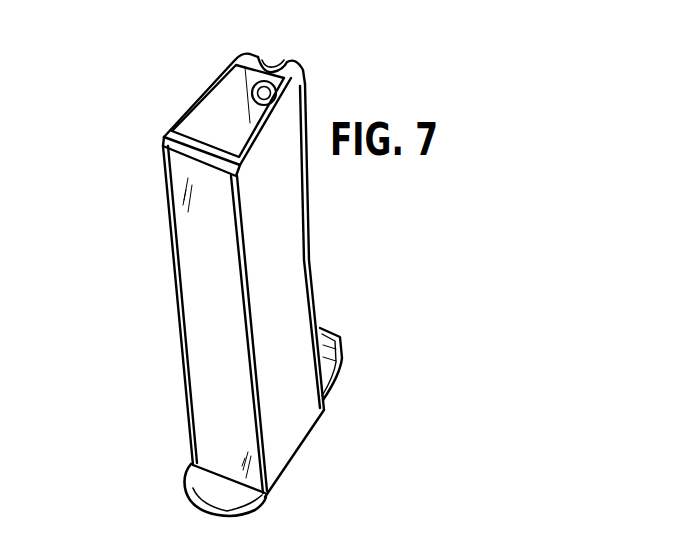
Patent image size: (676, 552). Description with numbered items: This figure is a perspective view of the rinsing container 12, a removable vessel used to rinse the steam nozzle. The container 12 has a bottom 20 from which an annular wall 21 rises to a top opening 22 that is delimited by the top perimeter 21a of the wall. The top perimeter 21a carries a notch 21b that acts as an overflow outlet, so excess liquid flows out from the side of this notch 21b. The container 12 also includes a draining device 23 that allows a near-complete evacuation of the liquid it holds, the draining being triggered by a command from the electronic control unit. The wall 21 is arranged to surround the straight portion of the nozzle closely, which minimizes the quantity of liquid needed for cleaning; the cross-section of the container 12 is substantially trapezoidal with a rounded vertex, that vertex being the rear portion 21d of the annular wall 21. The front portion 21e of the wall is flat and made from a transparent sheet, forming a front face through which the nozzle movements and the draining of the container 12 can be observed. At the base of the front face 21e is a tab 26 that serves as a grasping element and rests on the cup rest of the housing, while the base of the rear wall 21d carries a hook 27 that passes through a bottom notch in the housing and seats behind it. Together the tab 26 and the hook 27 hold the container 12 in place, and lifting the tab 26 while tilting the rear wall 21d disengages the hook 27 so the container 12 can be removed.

The rinsing container 12 is at (134, 113).
The bottom 20 is at (288, 472).
The annular wall 21 is at (297, 395).
The top perimeter 21a is at (212, 73).
The notch 21b is at (273, 62).
The rear portion 21d is at (302, 300).
The front portion 21e is at (192, 273).
The top opening 22 is at (207, 122).
The draining device 23 is at (252, 54).
The tab 26 is at (202, 480).
The hook 27 is at (340, 350).